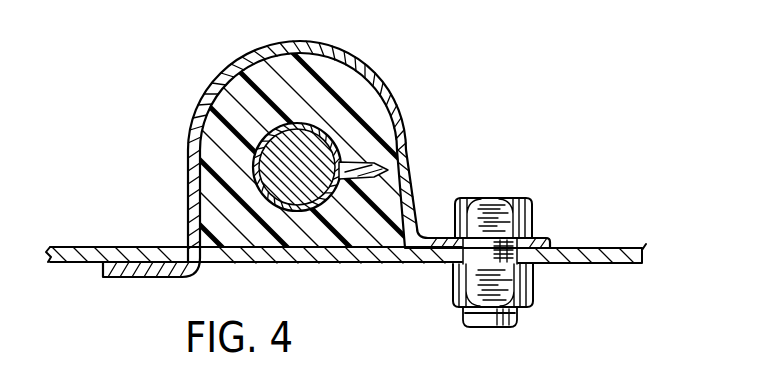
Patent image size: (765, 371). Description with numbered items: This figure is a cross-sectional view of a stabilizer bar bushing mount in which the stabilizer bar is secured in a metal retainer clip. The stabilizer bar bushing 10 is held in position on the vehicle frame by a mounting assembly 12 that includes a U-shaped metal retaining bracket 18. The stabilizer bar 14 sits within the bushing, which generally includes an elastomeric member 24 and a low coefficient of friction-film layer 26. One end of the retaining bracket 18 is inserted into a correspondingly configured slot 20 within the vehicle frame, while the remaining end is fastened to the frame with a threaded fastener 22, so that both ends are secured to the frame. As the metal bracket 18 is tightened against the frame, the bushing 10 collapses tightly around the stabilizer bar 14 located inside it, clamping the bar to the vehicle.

The stabilizer bar bushing 10 is at (325, 178).
The mounting assembly 12 is at (532, 235).
The stabilizer bar 14 is at (338, 130).
The U-shaped metal retaining bracket 18 is at (362, 68).
The slot 20 is at (157, 257).
The threaded fastener 22 is at (513, 182).
The elastomeric member 24 is at (392, 223).
The low coefficient of friction-film layer 26 is at (390, 164).